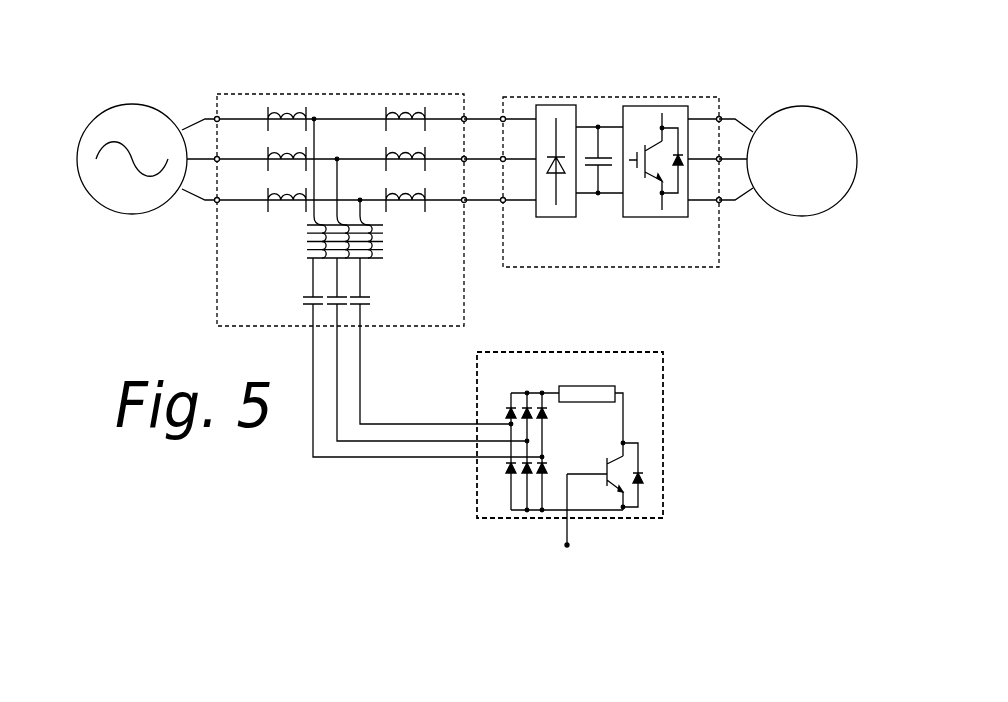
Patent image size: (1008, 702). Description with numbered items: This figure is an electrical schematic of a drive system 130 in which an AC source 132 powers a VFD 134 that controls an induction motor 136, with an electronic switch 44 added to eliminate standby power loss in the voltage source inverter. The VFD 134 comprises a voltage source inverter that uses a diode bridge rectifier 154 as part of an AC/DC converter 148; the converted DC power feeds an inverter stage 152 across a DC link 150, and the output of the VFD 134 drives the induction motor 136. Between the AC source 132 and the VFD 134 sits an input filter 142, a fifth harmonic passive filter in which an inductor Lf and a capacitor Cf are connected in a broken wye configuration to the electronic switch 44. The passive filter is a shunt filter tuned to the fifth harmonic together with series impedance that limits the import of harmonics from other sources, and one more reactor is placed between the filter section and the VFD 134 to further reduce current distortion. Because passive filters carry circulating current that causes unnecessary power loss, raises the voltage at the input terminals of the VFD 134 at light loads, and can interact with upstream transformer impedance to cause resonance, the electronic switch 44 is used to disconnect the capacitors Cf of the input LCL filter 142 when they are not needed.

The AC source 132 is at (148, 103).
The drive system 130 is at (404, 81).
The input filter 142 is at (213, 254).
The VFD 134 is at (612, 97).
The AC/DC converter 148 is at (553, 105).
The diode bridge rectifier 154 is at (548, 217).
The DC bus link 150 is at (615, 108).
The inverter 152 is at (655, 217).
The induction motor 136 is at (820, 105).
The electronic switch 44 is at (665, 425).